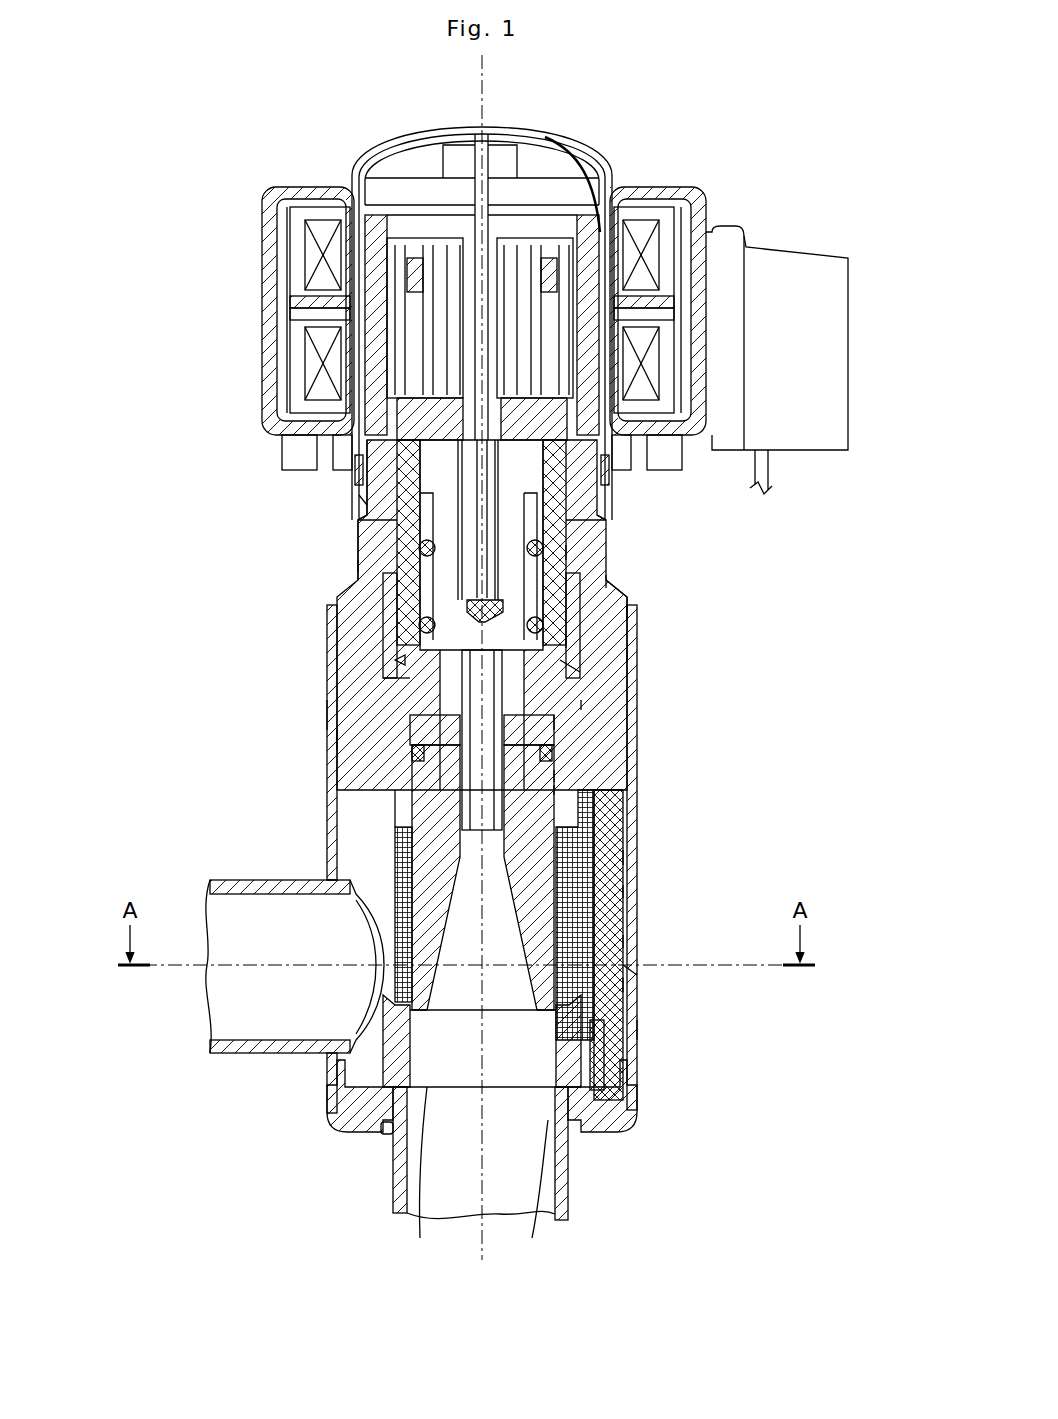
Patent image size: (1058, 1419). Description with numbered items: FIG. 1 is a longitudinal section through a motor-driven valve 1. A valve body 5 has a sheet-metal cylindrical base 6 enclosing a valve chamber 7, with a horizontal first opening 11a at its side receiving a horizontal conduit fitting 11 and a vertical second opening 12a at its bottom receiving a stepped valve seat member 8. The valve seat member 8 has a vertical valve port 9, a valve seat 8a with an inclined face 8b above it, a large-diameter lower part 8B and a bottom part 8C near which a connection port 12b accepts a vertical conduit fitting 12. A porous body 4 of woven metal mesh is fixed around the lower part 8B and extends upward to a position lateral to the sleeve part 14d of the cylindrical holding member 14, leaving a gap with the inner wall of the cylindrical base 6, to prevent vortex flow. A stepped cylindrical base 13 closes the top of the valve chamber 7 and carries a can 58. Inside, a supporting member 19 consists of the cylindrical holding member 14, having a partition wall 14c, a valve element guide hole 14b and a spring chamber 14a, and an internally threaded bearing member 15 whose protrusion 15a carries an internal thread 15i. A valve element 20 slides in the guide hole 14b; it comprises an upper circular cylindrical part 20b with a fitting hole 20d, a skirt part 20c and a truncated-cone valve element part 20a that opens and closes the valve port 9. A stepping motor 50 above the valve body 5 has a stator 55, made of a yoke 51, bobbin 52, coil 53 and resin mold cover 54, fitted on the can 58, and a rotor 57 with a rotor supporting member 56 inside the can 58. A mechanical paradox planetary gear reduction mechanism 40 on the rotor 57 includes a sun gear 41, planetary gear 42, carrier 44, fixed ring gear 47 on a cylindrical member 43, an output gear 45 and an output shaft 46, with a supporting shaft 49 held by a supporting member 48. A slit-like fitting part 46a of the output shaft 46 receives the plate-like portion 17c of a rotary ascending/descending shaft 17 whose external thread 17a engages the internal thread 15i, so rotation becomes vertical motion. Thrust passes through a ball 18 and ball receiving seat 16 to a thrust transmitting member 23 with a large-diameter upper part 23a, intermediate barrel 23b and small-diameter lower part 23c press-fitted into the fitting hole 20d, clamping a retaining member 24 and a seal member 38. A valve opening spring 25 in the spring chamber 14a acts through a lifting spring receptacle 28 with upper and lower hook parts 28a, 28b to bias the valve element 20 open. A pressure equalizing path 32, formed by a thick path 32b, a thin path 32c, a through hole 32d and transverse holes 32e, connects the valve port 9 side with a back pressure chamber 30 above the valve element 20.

The motor-driven valve 1 is at (672, 116).
The porous body 4 is at (636, 1032).
The valve body 5 is at (330, 715).
The cylindrical base 6 is at (630, 1096).
The valve chamber 7 is at (575, 915).
The valve seat member 8 is at (330, 1080).
The valve seat 8a is at (626, 985).
The inclined face 8b is at (628, 1006).
The large-diameter lower part 8B is at (352, 1112).
The bottom part 8C is at (600, 1130).
The valve port 9 is at (425, 1178).
The conduit fitting 11 is at (232, 880).
The first opening 11a is at (330, 880).
The conduit fitting 12 is at (393, 1192).
The second opening 12a is at (388, 1135).
The connection port 12b is at (533, 1195).
The stepped cylindrical base 13 is at (610, 588).
The cylindrical holding member 14 is at (610, 540).
The spring chamber 14a is at (358, 548).
The valve element guide hole 14b is at (562, 722).
The partition wall 14c is at (572, 668).
The sleeve part 14d is at (606, 531).
The internally threaded bearing member 15 is at (600, 505).
The protrusion 15a is at (608, 582).
The internal thread 15i is at (570, 550).
The ball receiving seat 16 is at (630, 656).
The rotary ascending/descending shaft 17 is at (366, 530).
The external thread 17a is at (630, 614).
The plate-like portion 17c is at (365, 500).
The ball 18 is at (602, 640).
The supporting member 19 is at (758, 515).
The valve element 20 is at (632, 912).
The valve element part 20a is at (640, 972).
The upper circular cylindrical part 20b is at (632, 828).
The skirt part 20c is at (626, 890).
The fitting hole 20d is at (396, 802).
The thrust transmitting member 23 is at (600, 690).
The large-diameter upper part 23a is at (403, 632).
The intermediate barrel 23b is at (400, 688).
The small-diameter lower part 23c is at (562, 776).
The retaining member 24 is at (562, 738).
The valve opening spring 25 is at (378, 583).
The lifting spring receptacle 28 is at (400, 598).
The upper hook part 28a is at (374, 566).
The lower hook part 28b is at (400, 665).
The back pressure chamber 30 is at (418, 701).
The pressure equalizing path 32 is at (498, 996).
The thick path 32b is at (626, 940).
The thin path 32c is at (626, 857).
The through hole 32d is at (400, 762).
The transverse holes 32e is at (342, 740).
The seal member 38 is at (592, 757).
The mechanical paradox planetary gear reduction mechanism 40 is at (425, 240).
The sun gear 41 is at (660, 345).
The planetary gear 42 is at (636, 290).
The cylindrical member 43 is at (660, 378).
The carrier 44 is at (303, 345).
The output gear 45 is at (303, 378).
The output shaft 46 is at (604, 470).
The slit-like fitting part 46a is at (356, 462).
The fixed ring gear 47 is at (556, 252).
The supporting member 48 is at (452, 150).
The supporting shaft 49 is at (489, 140).
The stepping motor 50 is at (700, 180).
The yoke 51 is at (295, 318).
The bobbin 52 is at (295, 300).
The coil 53 is at (290, 258).
The resin mold cover 54 is at (322, 190).
The stator 55 is at (262, 195).
The rotor supporting member 56 is at (540, 185).
The rotor 57 is at (603, 212).
The can 58 is at (522, 130).